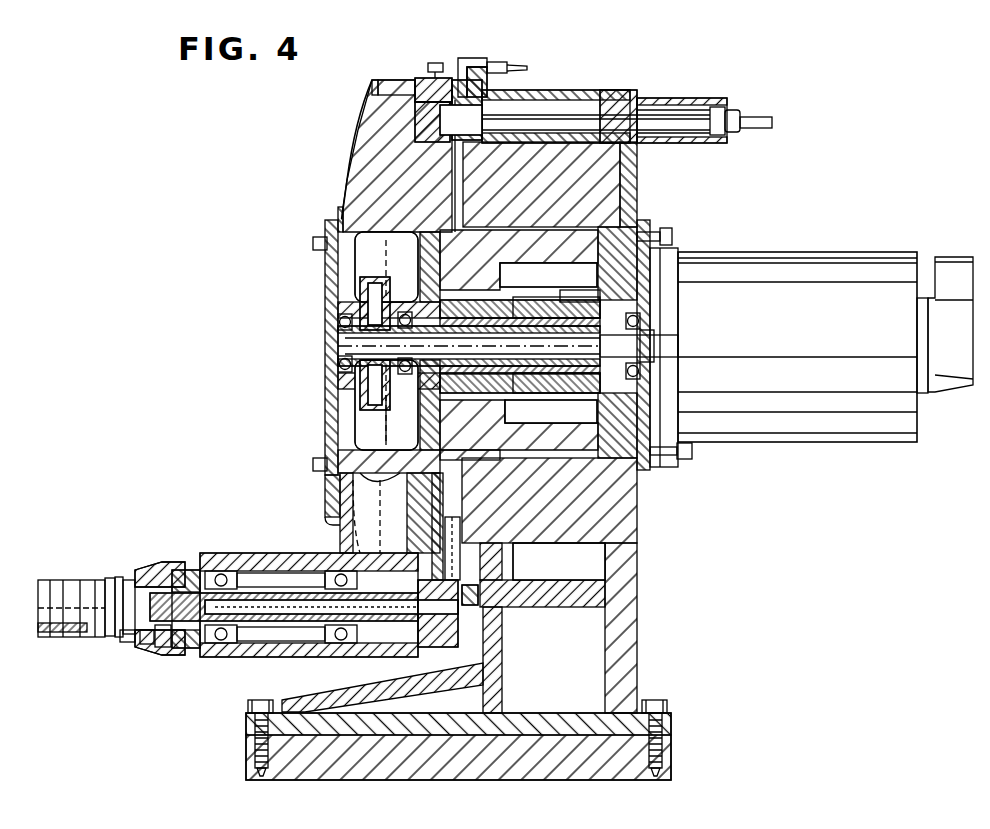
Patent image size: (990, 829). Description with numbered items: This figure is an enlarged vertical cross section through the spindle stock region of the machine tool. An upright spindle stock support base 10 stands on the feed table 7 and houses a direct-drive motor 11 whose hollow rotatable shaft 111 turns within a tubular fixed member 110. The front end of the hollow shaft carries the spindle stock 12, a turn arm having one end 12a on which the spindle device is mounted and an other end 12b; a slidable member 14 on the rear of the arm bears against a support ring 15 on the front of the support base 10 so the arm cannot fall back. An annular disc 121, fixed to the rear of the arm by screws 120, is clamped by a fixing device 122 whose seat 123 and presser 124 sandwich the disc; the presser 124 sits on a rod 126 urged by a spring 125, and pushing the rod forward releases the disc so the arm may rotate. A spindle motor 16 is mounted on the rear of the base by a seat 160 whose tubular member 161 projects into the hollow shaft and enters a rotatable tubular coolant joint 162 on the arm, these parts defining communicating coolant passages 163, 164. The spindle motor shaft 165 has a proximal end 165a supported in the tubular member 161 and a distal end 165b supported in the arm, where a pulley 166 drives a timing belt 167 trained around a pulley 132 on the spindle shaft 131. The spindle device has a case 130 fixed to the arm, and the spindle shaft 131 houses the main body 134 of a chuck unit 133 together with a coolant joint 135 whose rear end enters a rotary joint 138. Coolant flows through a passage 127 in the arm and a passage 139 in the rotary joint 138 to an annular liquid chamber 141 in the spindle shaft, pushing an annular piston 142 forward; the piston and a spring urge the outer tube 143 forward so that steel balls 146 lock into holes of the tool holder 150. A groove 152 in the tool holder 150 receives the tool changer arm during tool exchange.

The feed table 7 is at (601, 764).
The spindle stock support base 10 is at (638, 668).
The motor 11 is at (632, 476).
The tubular fixed member 110 is at (630, 527).
The hollow rotatable shaft 111 is at (600, 203).
The spindle stock 12 is at (356, 178).
The one end 12a is at (338, 522).
The other end 12b is at (366, 106).
The annular disc 121 is at (415, 138).
The presser 124 is at (415, 87).
The slidable member 14 is at (432, 63).
The seat 123 is at (458, 84).
The support ring 15 is at (500, 66).
The fixing device 122 is at (572, 108).
The screws 120 is at (462, 157).
The spring 125 is at (647, 106).
The rod 126 is at (690, 120).
The spindle motor 16 is at (873, 257).
The seat 160 is at (672, 235).
The coolant passage 163 is at (690, 452).
The proximal end 165a is at (660, 360).
The spindle motor shaft 165 is at (440, 290).
The distal end 165b is at (336, 346).
The pulley 166 is at (368, 298).
The timing belt 167 is at (365, 424).
The tubular coolant joint 162 is at (531, 302).
The tubular member 161 is at (563, 303).
The coolant passage 164 is at (508, 400).
The case 130 is at (248, 553).
The pulley 132 is at (380, 573).
The coolant passage 127 is at (433, 520).
The spindle shaft 131 is at (311, 625).
The coolant joint 135 is at (253, 622).
The annular liquid chamber 141 is at (198, 648).
The annular piston 142 is at (170, 567).
The steel balls 146 is at (130, 580).
The groove 152 is at (110, 580).
The tool holder 150 is at (55, 580).
The outer tube 143 is at (124, 640).
The chuck unit 133 is at (152, 645).
The main body 134 is at (180, 623).
The rotary joint 138 is at (440, 648).
The passage 139 is at (470, 624).